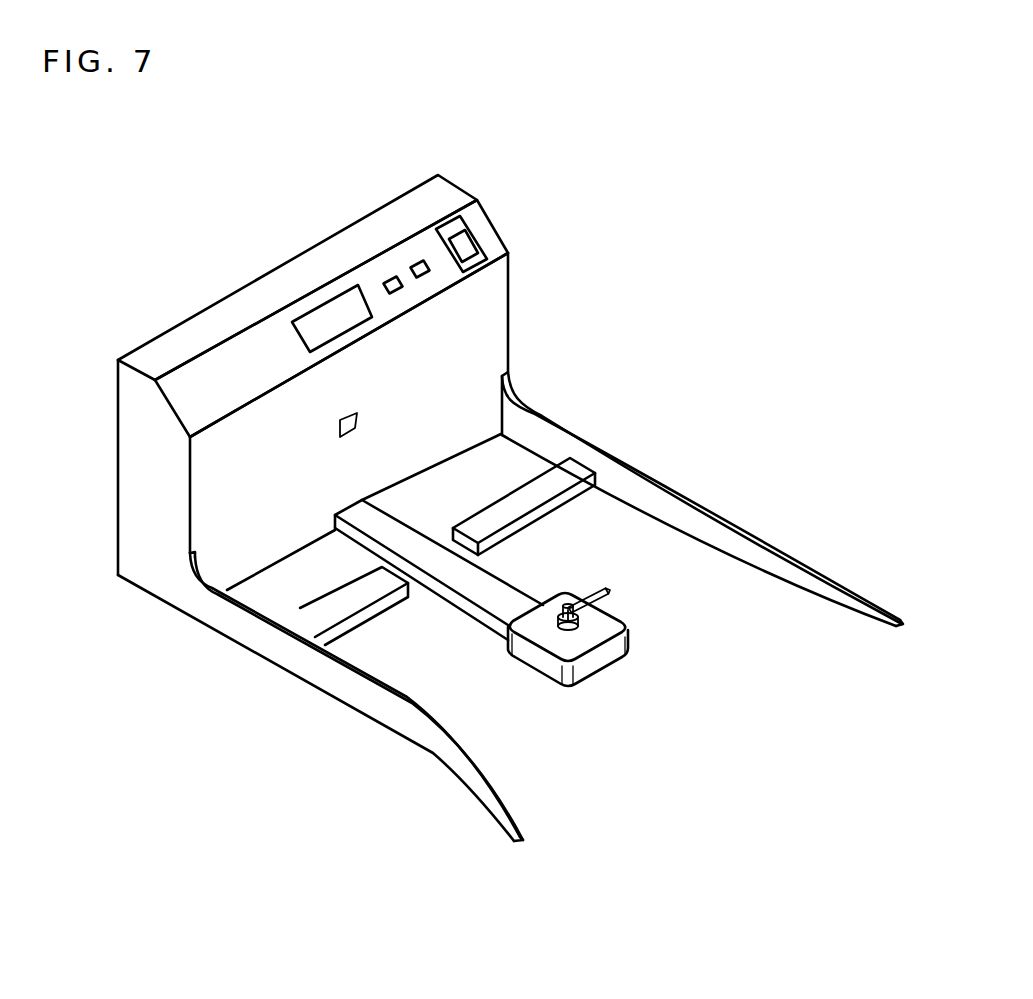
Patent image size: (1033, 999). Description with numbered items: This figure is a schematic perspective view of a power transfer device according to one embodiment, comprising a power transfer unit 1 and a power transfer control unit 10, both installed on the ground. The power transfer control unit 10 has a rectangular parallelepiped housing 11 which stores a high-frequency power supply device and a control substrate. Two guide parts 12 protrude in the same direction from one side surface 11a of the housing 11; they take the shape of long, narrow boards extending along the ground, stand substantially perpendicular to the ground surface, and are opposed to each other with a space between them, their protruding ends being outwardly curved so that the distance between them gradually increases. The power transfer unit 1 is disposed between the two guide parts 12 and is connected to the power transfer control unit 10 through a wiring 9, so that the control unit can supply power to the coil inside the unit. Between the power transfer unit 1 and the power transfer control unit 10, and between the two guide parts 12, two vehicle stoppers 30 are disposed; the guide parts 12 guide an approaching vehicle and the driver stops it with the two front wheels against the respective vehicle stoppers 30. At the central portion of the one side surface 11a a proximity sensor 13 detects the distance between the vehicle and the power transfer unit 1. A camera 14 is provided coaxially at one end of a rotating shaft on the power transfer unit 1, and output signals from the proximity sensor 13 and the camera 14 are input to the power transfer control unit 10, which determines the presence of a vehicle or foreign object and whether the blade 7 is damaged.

The power transfer unit 1 is at (604, 667).
The blade 7 is at (598, 590).
The wiring 9 is at (527, 603).
The power transfer control unit 10 is at (384, 207).
The housing 11 is at (137, 432).
The one side surface 11a is at (478, 298).
The guide parts 12 is at (705, 512).
The proximity sensor 13 is at (346, 434).
The camera 14 is at (592, 613).
The vehicle stoppers 30 is at (573, 472).